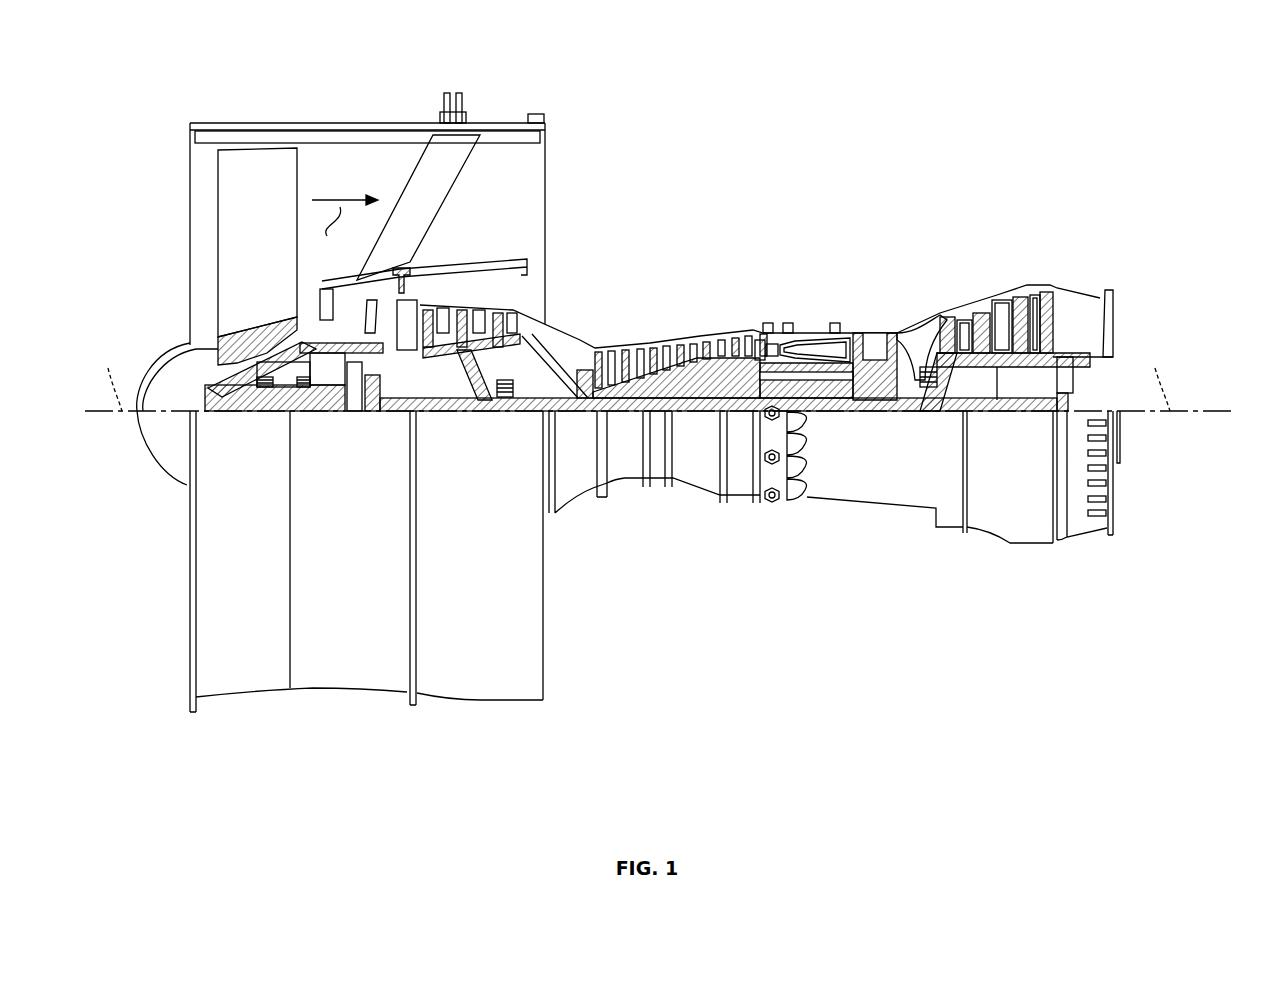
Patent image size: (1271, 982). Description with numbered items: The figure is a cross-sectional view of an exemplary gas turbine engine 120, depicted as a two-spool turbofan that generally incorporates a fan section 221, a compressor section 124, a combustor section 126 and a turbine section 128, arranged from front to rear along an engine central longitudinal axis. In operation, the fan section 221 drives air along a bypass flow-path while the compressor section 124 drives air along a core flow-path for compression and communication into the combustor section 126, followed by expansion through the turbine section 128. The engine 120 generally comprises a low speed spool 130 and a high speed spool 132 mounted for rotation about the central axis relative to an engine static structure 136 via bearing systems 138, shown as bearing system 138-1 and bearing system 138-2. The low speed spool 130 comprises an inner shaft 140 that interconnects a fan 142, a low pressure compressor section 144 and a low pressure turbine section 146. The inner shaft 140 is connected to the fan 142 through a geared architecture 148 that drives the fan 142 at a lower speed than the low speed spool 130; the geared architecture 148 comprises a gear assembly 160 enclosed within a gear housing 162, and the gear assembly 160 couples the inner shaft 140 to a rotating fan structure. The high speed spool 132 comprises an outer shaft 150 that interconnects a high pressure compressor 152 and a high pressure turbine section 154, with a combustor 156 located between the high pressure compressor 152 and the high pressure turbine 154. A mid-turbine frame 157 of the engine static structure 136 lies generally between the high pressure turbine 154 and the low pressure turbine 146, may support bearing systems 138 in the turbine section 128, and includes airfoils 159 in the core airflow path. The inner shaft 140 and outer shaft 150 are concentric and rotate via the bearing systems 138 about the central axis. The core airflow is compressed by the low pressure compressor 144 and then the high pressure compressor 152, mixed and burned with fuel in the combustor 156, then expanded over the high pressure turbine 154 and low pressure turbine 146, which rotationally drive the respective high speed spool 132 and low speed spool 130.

The gas turbine engine 120 is at (850, 134).
The fan section 221 is at (388, 105).
The fan 142 is at (236, 253).
The engine static structure 136 is at (180, 680).
The bearing system 138-1 is at (260, 408).
The gear assembly 160 is at (367, 413).
The gear housing 162 is at (380, 362).
The low pressure compressor section 144 is at (487, 308).
The compressor section 124 is at (415, 224).
The bearing system 138-2 is at (500, 413).
The high pressure compressor 152 is at (703, 343).
The inner shaft 140 is at (563, 413).
The geared architecture 148 is at (365, 430).
The high speed spool 132 is at (752, 335).
The combustor section 126 is at (862, 224).
The combustor 156 is at (812, 347).
The high pressure turbine section 154 is at (873, 333).
The outer shaft 150 is at (812, 405).
The low speed spool 130 is at (702, 425).
The mid-turbine frame 157 is at (917, 320).
The airfoils 159 is at (930, 330).
The bearing system 138 is at (920, 385).
The turbine section 128 is at (1057, 224).
The low pressure turbine section 146 is at (1003, 292).